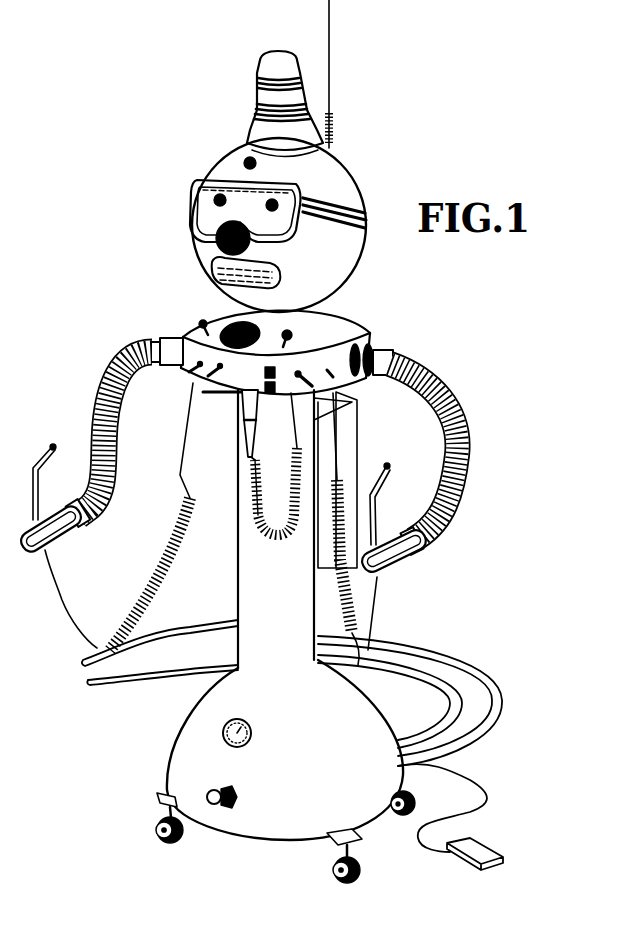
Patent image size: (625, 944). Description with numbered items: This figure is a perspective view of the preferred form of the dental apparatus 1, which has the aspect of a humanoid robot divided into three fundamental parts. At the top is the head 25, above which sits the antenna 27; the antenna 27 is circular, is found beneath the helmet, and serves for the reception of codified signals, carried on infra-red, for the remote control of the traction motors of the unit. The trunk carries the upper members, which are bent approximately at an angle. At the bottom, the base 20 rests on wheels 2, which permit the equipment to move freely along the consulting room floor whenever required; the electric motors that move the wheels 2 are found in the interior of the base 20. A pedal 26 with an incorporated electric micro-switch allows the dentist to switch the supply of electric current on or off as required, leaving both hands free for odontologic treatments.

The dental apparatus 1 is at (337, 332).
The wheels 2 is at (334, 873).
The base 20 is at (197, 747).
The head 25 is at (332, 177).
The pedal 26 is at (487, 853).
The antenna 27 is at (247, 143).